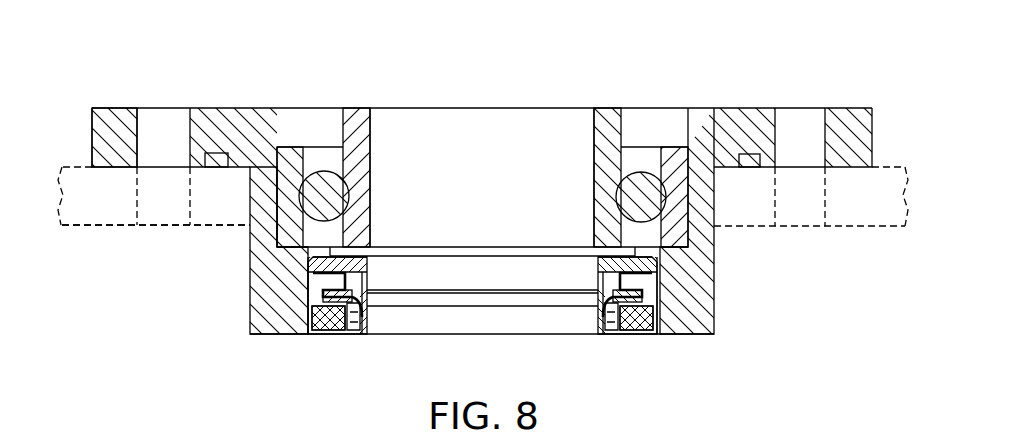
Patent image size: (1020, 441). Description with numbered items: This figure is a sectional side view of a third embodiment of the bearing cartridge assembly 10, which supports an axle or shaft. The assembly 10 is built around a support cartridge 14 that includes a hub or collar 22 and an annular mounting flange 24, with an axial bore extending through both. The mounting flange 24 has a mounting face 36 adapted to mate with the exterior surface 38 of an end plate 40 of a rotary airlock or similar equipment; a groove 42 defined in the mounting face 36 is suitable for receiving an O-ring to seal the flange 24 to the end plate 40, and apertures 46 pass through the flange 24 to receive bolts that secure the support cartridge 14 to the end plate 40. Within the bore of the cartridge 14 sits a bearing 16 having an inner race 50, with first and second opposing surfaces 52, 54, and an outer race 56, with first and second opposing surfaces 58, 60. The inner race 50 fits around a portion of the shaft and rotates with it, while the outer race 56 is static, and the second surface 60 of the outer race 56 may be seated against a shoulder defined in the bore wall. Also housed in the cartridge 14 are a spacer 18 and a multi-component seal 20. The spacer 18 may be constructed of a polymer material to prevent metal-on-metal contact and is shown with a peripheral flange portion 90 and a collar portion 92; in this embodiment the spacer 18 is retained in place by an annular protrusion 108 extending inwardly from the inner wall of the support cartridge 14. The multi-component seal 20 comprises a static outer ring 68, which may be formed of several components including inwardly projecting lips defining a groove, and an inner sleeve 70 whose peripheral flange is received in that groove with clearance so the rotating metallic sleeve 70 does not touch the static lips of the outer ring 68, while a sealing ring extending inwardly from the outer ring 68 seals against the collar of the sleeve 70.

The bearing cartridge assembly 10 is at (858, 66).
The support cartridge 14 is at (228, 98).
The bearing 16 is at (310, 128).
The spacer 18 is at (492, 264).
The multi-component seal 20 is at (297, 328).
The hub or collar 22 is at (250, 292).
The annular mounting flange 24 is at (91, 108).
The mounting face 36 is at (118, 167).
The exterior surface 38 is at (82, 165).
The end plate 40 is at (102, 225).
The groove 42 is at (218, 168).
The apertures 46 is at (167, 118).
The inner race 50 is at (362, 153).
The first surface 52 is at (357, 108).
The second surface 54 is at (368, 252).
The outer race 56 is at (277, 160).
The first surface 58 is at (293, 146).
The second surface 60 is at (283, 257).
The outer ring 68 is at (308, 316).
The inner sleeve 70 is at (447, 306).
The peripheral flange portion 90 is at (333, 262).
The collar portion 92 is at (358, 280).
The annular protrusion 108 is at (322, 255).